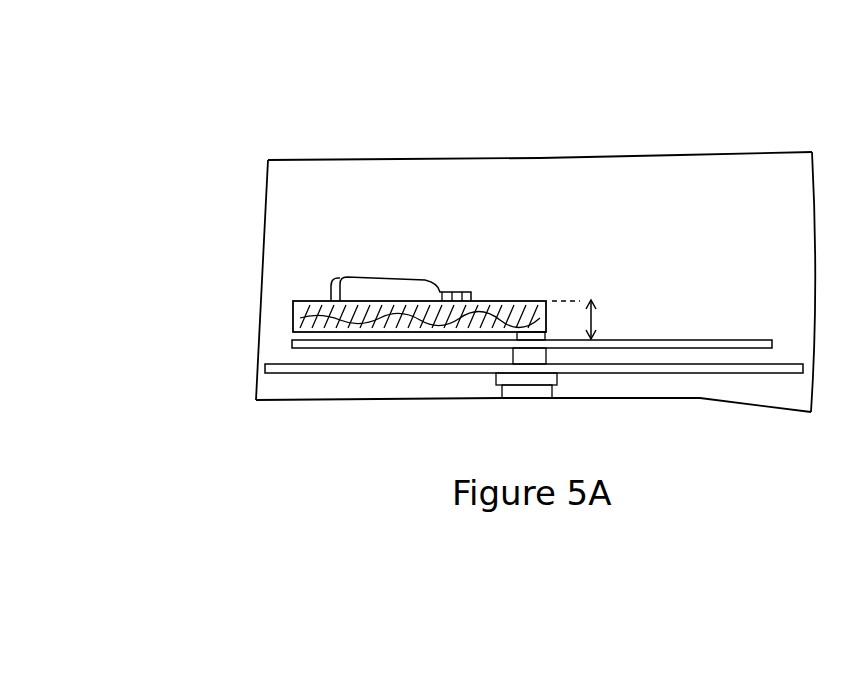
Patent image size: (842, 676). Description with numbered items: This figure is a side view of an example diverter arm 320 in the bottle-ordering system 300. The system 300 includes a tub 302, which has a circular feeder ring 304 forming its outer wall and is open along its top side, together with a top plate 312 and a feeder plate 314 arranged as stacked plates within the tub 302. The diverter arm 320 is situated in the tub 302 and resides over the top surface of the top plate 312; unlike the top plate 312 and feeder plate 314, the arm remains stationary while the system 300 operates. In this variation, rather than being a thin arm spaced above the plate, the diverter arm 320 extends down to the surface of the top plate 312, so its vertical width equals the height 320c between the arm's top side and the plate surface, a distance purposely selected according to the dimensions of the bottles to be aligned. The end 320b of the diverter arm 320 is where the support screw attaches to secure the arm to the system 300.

The system 300 is at (265, 96).
The tub 302 is at (248, 247).
The feeder ring 304 is at (263, 188).
The top plate 312 is at (292, 341).
The feeder plate 314 is at (268, 366).
The diverter arm 320 is at (292, 303).
The end of diverter arm 320b is at (506, 298).
The distance (height) 320c is at (598, 323).